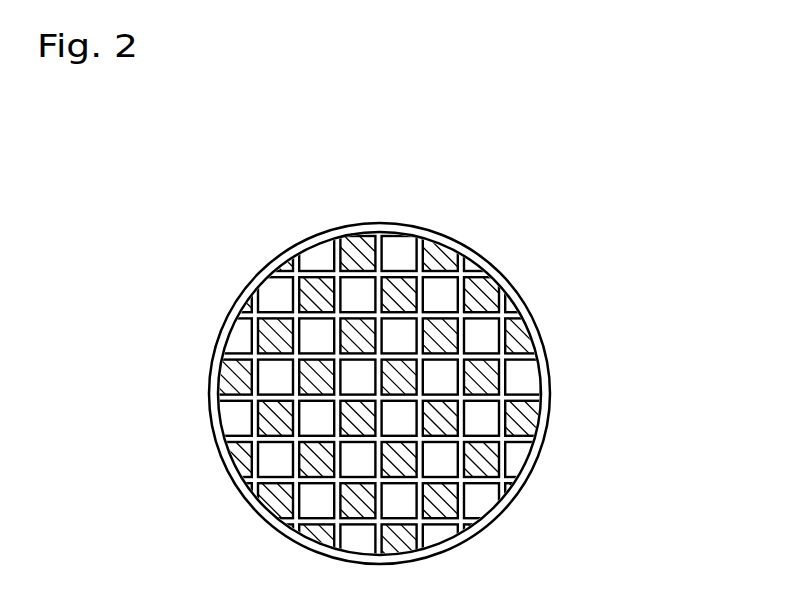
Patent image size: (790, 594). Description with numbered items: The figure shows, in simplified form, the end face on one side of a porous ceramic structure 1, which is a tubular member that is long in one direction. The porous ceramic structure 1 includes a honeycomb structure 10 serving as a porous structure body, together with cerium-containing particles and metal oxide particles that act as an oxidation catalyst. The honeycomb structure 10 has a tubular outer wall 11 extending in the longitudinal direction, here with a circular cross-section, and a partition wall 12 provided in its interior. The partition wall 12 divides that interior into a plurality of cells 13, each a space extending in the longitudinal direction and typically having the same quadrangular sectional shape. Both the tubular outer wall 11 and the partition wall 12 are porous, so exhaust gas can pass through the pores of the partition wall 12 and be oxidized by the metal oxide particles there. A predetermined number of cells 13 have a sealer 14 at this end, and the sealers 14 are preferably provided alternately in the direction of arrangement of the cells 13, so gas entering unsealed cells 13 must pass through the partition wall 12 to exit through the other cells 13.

The porous ceramic structure 1 is at (258, 164).
The honeycomb structure 10 is at (430, 222).
The tubular outer wall 11 is at (478, 265).
The partition wall 12 is at (510, 300).
The cells 13 is at (486, 333).
The sealer 14 is at (278, 332).